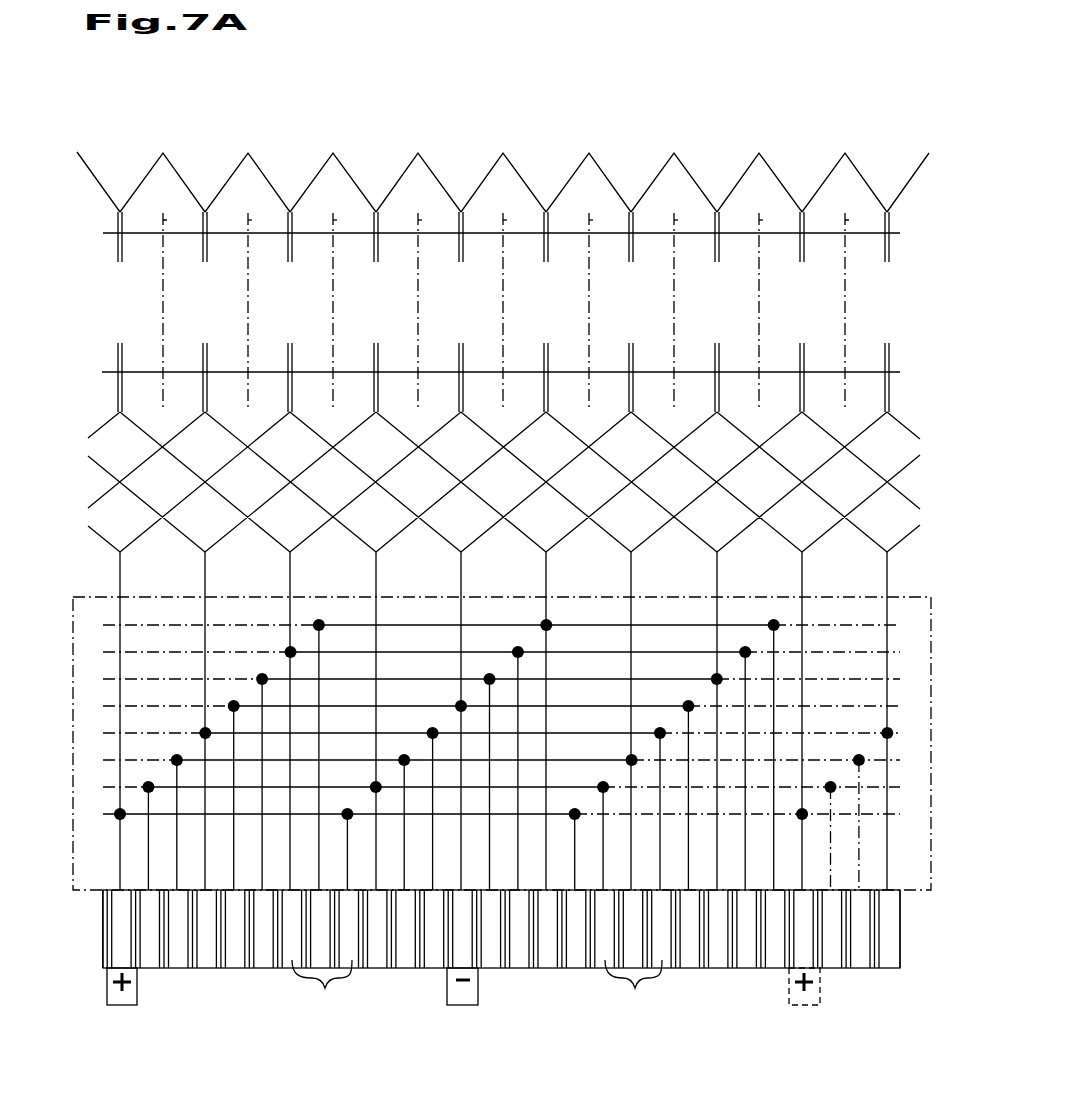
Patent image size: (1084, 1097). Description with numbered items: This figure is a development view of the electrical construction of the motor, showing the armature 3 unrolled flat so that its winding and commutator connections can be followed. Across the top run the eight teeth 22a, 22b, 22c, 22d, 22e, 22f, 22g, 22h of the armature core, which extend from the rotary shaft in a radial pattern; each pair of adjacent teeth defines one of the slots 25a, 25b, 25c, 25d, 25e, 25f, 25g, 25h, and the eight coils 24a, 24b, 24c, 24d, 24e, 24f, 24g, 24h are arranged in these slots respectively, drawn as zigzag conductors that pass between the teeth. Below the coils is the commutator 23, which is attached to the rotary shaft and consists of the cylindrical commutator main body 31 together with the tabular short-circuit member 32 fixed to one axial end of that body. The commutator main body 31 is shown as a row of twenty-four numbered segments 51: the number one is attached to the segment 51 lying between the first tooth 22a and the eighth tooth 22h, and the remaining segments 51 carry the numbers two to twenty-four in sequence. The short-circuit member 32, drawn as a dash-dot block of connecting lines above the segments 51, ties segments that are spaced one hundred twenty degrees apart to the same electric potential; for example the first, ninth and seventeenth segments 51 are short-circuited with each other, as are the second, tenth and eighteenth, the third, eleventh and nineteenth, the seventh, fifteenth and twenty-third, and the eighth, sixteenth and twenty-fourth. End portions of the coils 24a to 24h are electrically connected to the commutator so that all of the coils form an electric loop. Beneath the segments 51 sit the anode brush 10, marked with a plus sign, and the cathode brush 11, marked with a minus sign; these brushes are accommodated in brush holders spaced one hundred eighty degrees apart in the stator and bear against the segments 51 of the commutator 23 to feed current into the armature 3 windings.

The armature 3 is at (717, 100).
The coil 24h is at (163, 152).
The coil 24a is at (248, 152).
The coil 24b is at (333, 152).
The coil 24c is at (418, 152).
The coil 24d is at (503, 152).
The coil 24e is at (589, 152).
The coil 24f is at (674, 152).
The coil 24g is at (759, 152).
The eighth tooth 22h is at (164, 222).
The first tooth 22a is at (249, 222).
The tooth 22b is at (334, 222).
The tooth 22c is at (419, 222).
The tooth 22d is at (504, 222).
The tooth 22e is at (590, 222).
The tooth 22f is at (675, 222).
The tooth 22g is at (760, 222).
The slot 25h is at (461, 312).
The slot 25a is at (546, 312).
The slot 25b is at (290, 312).
The slot 25c is at (376, 312).
The slot 25d is at (461, 312).
The slot 25e is at (546, 312).
The slot 25f is at (631, 312).
The slot 25g is at (717, 312).
The short-circuit member 32 is at (390, 597).
The commutator main body 31 is at (104, 928).
The segment 51 is at (477, 989).
The anode brush 10 is at (122, 1006).
The cathode brush 11 is at (462, 1006).
The commutator 23 is at (918, 890).